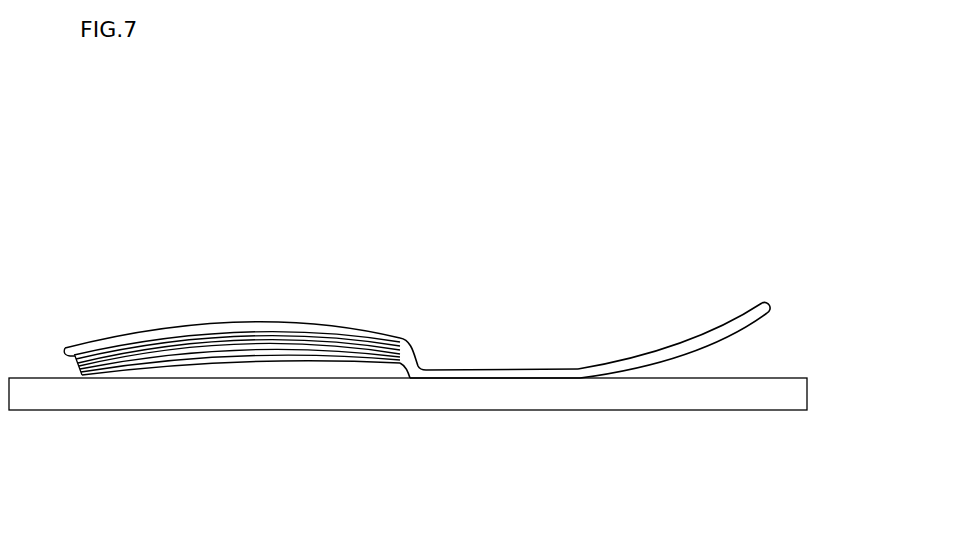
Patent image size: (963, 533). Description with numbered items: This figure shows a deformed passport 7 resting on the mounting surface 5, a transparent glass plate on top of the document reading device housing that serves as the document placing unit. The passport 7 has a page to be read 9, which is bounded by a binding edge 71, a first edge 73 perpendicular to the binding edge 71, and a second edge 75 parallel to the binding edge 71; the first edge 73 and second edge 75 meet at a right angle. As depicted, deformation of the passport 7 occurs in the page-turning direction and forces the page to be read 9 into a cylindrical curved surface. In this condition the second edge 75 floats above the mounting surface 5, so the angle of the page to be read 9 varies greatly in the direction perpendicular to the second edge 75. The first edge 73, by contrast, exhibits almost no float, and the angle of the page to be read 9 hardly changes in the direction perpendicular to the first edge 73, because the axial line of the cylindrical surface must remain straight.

The mounting surface 5 is at (772, 378).
The passport 7 is at (242, 282).
The page to be read 9 is at (682, 357).
The binding edge 71 is at (410, 343).
The first edge 73 is at (584, 362).
The second edge 75 is at (765, 302).